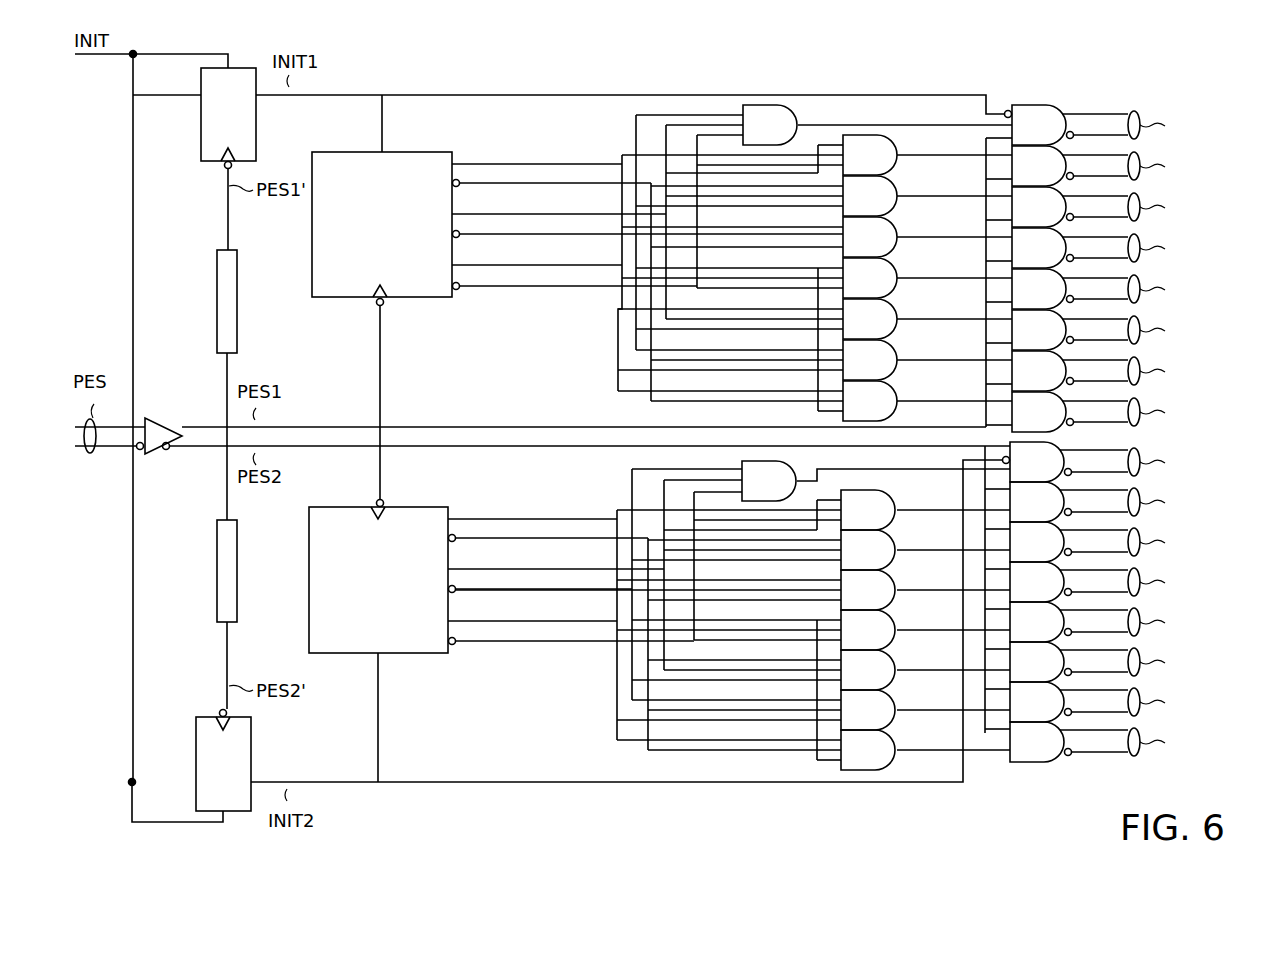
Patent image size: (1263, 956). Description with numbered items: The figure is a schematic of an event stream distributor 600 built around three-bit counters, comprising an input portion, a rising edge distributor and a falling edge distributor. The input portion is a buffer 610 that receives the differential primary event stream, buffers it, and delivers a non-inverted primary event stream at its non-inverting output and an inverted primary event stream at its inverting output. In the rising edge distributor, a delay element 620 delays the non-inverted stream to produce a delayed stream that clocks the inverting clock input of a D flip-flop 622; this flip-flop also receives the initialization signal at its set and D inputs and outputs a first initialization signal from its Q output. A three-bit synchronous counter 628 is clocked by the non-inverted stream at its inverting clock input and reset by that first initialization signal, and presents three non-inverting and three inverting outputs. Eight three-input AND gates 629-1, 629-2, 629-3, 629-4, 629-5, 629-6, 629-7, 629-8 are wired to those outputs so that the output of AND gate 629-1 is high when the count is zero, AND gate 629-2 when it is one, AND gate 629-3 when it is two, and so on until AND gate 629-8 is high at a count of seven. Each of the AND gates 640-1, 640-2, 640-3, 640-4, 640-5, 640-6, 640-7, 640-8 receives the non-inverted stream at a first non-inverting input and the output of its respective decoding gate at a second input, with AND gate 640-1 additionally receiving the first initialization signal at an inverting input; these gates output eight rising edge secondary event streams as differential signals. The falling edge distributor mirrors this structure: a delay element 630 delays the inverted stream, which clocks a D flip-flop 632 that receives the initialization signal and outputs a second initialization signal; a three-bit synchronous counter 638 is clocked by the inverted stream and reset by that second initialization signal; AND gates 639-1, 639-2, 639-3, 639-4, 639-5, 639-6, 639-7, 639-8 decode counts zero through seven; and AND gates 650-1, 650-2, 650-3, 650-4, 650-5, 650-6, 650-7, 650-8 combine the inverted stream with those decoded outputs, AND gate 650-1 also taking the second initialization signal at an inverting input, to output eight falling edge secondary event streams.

The event stream distributor 600 is at (690, 67).
The buffer 610 is at (153, 417).
The delay element 620 is at (239, 263).
The D flip-flop 622 is at (241, 68).
The 3-bit synchronous counter 628 is at (420, 152).
The AND gate 629-1 is at (770, 125).
The AND gate 629-2 is at (870, 155).
The AND gate 629-3 is at (870, 196).
The AND gate 629-4 is at (870, 237).
The AND gate 629-5 is at (870, 278).
The AND gate 629-6 is at (870, 319).
The AND gate 629-7 is at (870, 360).
The AND gate 629-8 is at (870, 401).
The delay element 630 is at (239, 533).
The D flip-flop 632 is at (252, 729).
The 3-bit synchronous counter 638 is at (420, 507).
The AND gate 639-1 is at (769, 481).
The AND gate 639-2 is at (868, 510).
The AND gate 639-3 is at (868, 550).
The AND gate 639-4 is at (868, 590).
The AND gate 639-5 is at (868, 630).
The AND gate 639-6 is at (868, 670).
The AND gate 639-7 is at (868, 710).
The AND gate 639-8 is at (868, 750).
The AND gate 640-1 is at (1123, 125).
The AND gate 640-2 is at (1123, 166).
The AND gate 640-3 is at (1123, 207).
The AND gate 640-4 is at (1123, 248).
The AND gate 640-5 is at (1123, 289).
The AND gate 640-6 is at (1123, 330).
The AND gate 640-7 is at (1123, 371).
The AND gate 640-8 is at (1123, 412).
The AND gate 650-1 is at (1121, 462).
The AND gate 650-2 is at (1121, 502).
The AND gate 650-3 is at (1121, 542).
The AND gate 650-4 is at (1121, 582).
The AND gate 650-5 is at (1121, 622).
The AND gate 650-6 is at (1121, 662).
The AND gate 650-7 is at (1121, 702).
The AND gate 650-8 is at (1121, 742).